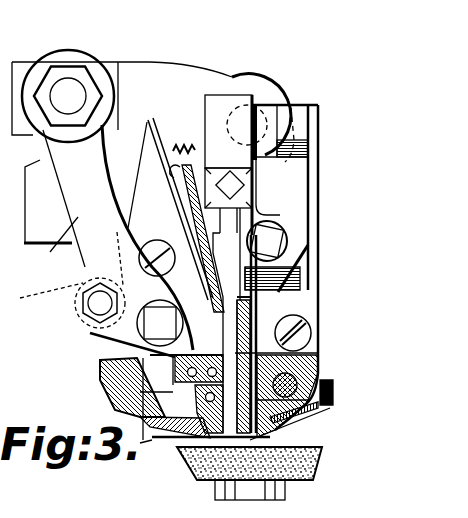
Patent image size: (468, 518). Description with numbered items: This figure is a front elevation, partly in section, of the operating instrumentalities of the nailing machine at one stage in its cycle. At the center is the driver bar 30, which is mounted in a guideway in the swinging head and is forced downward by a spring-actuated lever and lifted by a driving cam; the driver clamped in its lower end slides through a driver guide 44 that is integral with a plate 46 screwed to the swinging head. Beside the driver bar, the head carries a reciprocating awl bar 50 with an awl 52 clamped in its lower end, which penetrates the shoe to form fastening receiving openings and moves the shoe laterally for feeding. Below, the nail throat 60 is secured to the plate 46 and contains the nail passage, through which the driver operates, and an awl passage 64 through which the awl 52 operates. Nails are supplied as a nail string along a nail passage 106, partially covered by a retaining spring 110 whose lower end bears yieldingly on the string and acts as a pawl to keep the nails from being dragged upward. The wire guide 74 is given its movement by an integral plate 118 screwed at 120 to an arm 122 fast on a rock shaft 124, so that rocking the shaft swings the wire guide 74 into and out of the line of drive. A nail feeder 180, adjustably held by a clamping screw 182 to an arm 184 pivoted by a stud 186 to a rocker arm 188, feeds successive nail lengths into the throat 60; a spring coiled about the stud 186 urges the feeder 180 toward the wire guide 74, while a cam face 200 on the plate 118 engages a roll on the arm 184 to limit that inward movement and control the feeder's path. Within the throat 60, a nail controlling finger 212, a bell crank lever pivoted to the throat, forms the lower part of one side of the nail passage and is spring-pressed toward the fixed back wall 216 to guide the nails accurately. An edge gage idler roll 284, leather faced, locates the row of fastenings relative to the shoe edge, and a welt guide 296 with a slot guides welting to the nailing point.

The driver bar 30 is at (258, 118).
The driver guide 44 is at (230, 257).
The plate 46 is at (305, 273).
The awl bar 50 is at (292, 198).
The awl 52 is at (298, 352).
The nail throat 60 is at (317, 370).
The awl passage 64 is at (322, 384).
The wire guide 74 is at (232, 328).
The nail passage 106 is at (55, 30).
The retaining spring 110 is at (170, 191).
The plate 118 is at (160, 290).
The screw 120 is at (83, 265).
The arm 122 is at (190, 108).
The rock shaft 124 is at (291, 104).
The nail feeder 180 is at (100, 370).
The clamping screw 182 is at (100, 337).
The arm 184 is at (118, 252).
The stud 186 is at (76, 90).
The rocker arm 188 is at (25, 62).
The cam face 200 is at (41, 304).
The nail controlling finger 212 is at (160, 443).
The back wall 216 is at (322, 412).
The idler roll 284 is at (305, 463).
The welt guide 296 is at (310, 435).